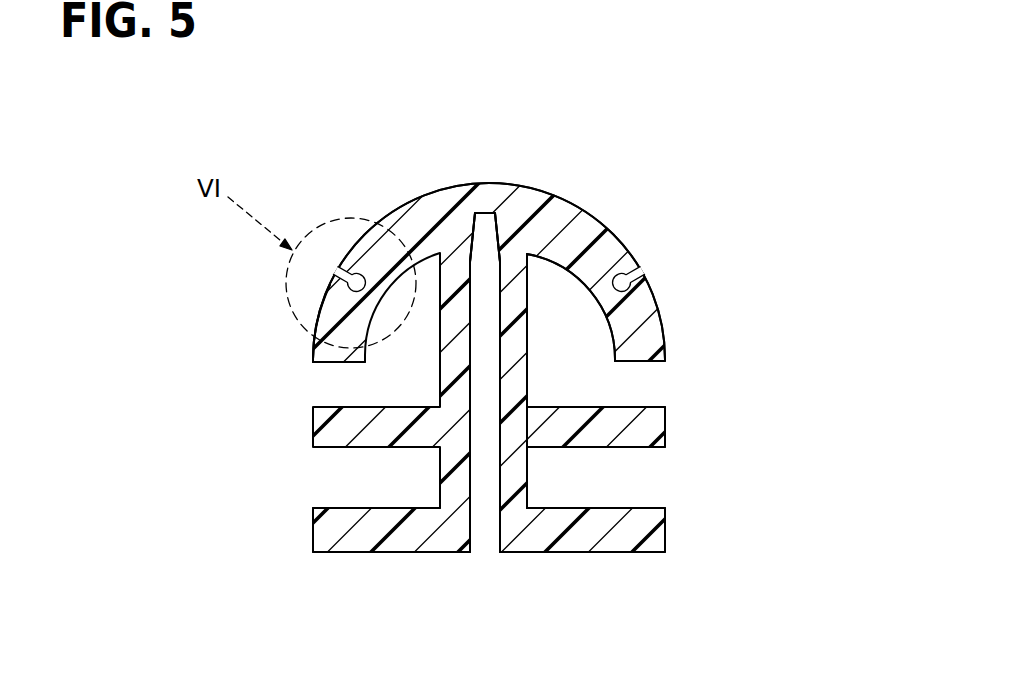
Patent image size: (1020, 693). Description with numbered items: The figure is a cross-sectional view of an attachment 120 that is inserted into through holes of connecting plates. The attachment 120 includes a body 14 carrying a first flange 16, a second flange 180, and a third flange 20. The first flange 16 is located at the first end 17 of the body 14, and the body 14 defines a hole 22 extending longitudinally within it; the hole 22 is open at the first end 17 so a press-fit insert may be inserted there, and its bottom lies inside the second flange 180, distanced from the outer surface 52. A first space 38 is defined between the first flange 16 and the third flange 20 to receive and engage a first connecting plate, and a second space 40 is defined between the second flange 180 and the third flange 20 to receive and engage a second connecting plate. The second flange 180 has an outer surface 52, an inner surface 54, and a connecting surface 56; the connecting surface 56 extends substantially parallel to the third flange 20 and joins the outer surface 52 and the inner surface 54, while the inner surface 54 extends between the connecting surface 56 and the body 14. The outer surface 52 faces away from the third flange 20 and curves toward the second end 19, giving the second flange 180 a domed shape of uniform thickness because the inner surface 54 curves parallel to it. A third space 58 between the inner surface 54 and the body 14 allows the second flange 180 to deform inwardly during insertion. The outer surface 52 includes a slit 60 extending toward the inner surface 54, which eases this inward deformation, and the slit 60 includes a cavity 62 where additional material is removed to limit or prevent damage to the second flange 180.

The attachment 120 is at (625, 177).
The second end 19 is at (487, 184).
The outer surface 52 is at (603, 224).
The third space 58 is at (563, 330).
The second flange 180 is at (650, 325).
The second space 40 is at (577, 378).
The third flange 20 is at (637, 430).
The first space 38 is at (610, 477).
The first flange 16 is at (640, 535).
The body 14 is at (510, 487).
The hole 22 is at (472, 515).
The first end 17 is at (435, 553).
The inner surface 54 is at (315, 347).
The connecting surface 56 is at (340, 362).
The slit 60 is at (338, 264).
The cavity 62 is at (355, 272).